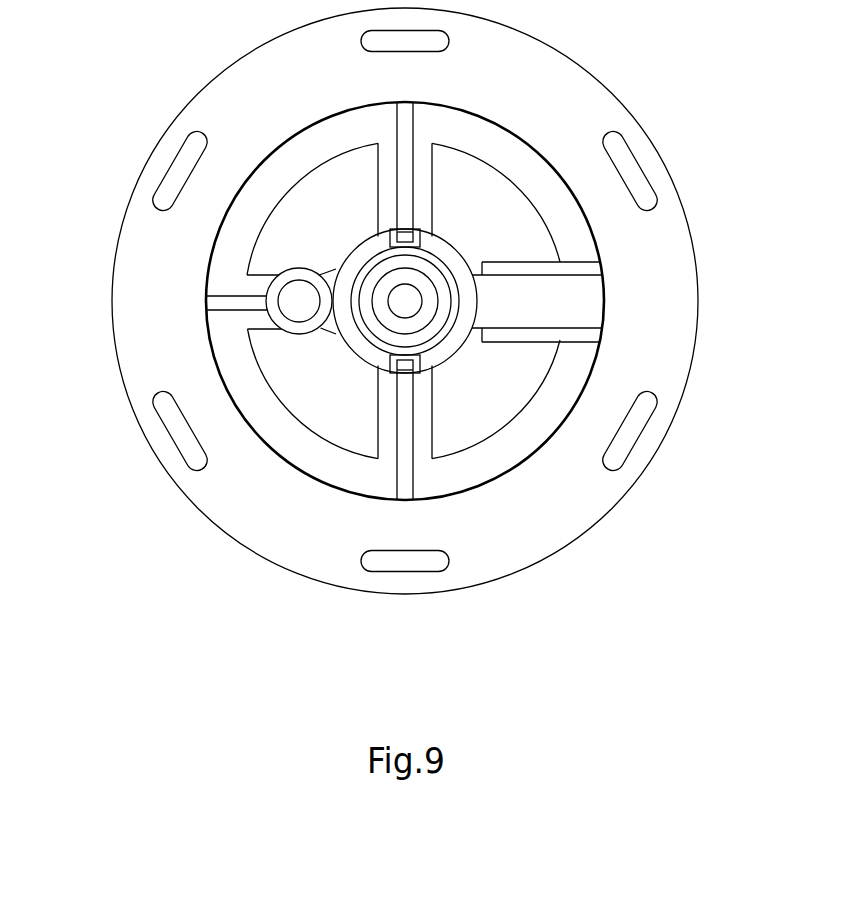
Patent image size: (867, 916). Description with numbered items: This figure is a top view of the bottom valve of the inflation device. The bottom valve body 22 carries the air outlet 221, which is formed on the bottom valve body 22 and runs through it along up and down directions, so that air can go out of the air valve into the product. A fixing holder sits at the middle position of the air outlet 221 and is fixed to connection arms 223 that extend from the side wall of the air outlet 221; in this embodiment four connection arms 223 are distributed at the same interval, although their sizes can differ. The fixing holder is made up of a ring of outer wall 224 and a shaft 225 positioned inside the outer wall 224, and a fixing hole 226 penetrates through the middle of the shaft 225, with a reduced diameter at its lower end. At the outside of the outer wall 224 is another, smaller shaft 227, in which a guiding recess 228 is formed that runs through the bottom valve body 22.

The bottom valve body 22 is at (680, 302).
The air outlet 221 is at (327, 430).
The connection arms 223 is at (387, 187).
The outer wall 224 is at (462, 352).
The shaft 225 is at (422, 282).
The fixing hole 226 is at (400, 297).
The shaft 227 is at (305, 333).
The guiding recess 228 is at (292, 292).